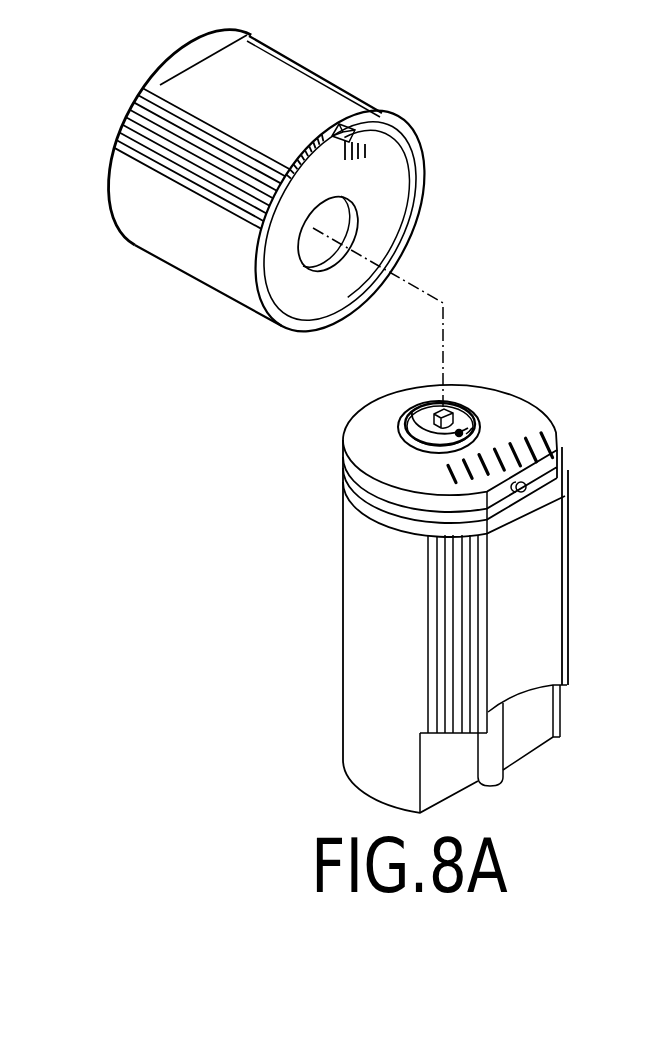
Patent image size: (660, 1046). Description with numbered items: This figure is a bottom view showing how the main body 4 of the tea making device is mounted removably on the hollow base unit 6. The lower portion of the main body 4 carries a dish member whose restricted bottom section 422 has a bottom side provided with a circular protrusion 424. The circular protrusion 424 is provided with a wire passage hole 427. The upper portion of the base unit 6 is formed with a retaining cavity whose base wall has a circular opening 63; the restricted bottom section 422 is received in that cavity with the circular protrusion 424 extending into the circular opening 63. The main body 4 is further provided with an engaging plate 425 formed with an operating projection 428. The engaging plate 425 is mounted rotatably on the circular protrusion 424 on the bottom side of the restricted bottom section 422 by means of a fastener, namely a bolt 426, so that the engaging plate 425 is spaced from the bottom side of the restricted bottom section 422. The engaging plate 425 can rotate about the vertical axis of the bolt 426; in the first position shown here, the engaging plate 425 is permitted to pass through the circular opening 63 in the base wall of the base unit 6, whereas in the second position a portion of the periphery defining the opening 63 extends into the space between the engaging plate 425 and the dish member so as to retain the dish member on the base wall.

The main body 4 is at (342, 545).
The base unit 6 is at (425, 167).
The circular opening 63 is at (345, 220).
The restricted bottom section 422 is at (368, 475).
The circular protrusion 424 is at (400, 422).
The engaging plate 425 is at (478, 422).
The bolt 426 is at (468, 425).
The wire passage hole 427 is at (414, 410).
The operating projection 428 is at (450, 412).